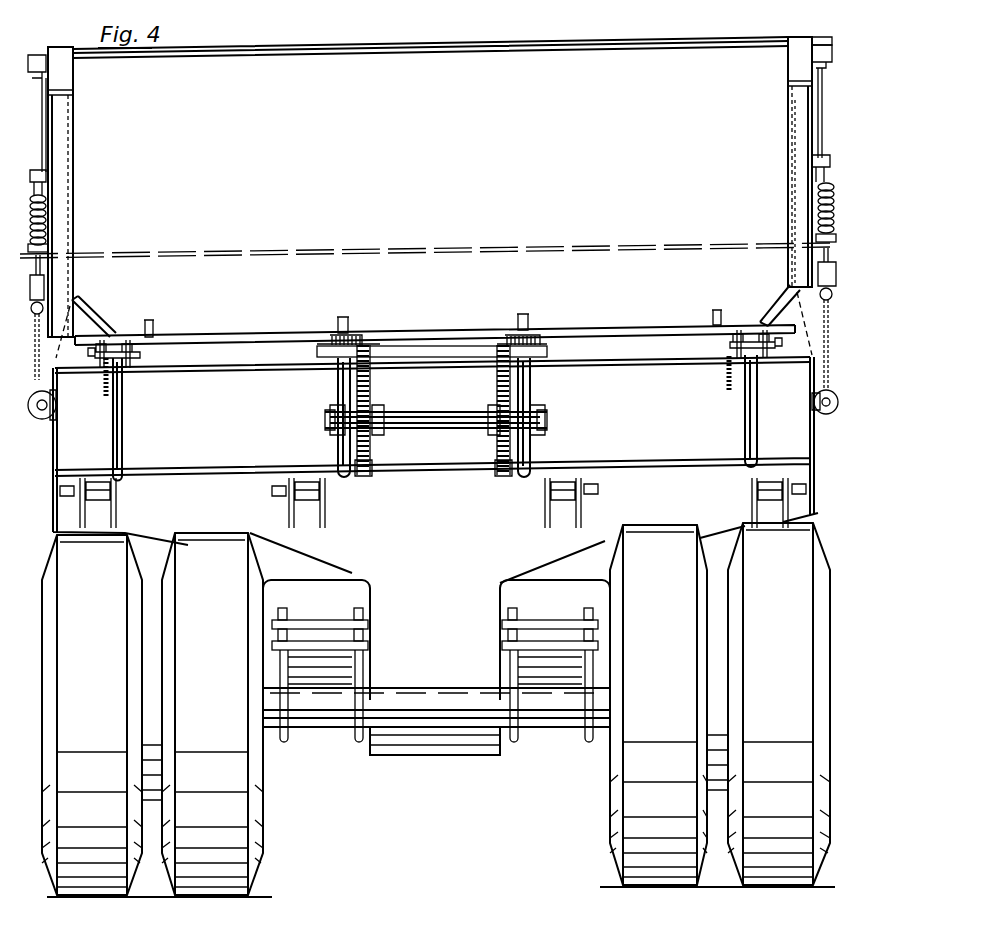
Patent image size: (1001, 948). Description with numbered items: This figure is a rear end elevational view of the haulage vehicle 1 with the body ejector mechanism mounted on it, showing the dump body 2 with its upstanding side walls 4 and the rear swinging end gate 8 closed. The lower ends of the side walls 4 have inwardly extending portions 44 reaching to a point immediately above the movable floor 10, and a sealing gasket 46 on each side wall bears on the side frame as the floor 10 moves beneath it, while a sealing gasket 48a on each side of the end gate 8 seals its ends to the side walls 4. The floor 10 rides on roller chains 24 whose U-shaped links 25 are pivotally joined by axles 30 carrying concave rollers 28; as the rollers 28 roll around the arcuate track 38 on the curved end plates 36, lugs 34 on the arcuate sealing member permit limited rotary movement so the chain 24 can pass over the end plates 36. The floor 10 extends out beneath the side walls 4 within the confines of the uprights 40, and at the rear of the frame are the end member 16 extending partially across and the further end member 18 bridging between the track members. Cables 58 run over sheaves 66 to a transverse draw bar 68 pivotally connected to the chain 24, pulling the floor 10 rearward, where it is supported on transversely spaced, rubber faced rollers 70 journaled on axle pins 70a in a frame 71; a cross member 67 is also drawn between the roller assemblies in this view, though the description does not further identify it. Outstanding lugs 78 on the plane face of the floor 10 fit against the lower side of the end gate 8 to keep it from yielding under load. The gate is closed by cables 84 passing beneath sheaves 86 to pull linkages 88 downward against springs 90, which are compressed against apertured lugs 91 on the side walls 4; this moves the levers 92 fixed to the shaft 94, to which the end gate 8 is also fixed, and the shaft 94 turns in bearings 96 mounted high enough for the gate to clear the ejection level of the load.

The haulage vehicle 1 is at (472, 762).
The body 2 is at (804, 30).
The side walls 4 is at (73, 163).
The rear end gate 8 is at (272, 64).
The floor 10 is at (630, 347).
The end member 16 is at (645, 465).
The end member 18 is at (425, 385).
The roller chain 24 is at (135, 352).
The links 25 is at (736, 343).
The rollers 28 is at (350, 345).
The axles 30 is at (733, 360).
The lugs 34 is at (100, 372).
The curved end plates 36 is at (123, 428).
The arcuate track 38 is at (346, 478).
The uprights 40 is at (788, 152).
The inwardly extending portions 44 is at (782, 298).
The sealing gasket 46 is at (96, 328).
The sealing gasket 48a is at (82, 320).
The cables 58 is at (366, 478).
The sheaves 66 is at (368, 476).
The shaft 67 is at (425, 428).
The draw bar 68 is at (470, 352).
The rollers 70 is at (314, 512).
The axle pins 70a is at (276, 491).
The frame 71 is at (340, 578).
The lugs 78 is at (140, 330).
The cable 84 is at (52, 408).
The sheaves 86 is at (52, 420).
The linkages 88 is at (44, 290).
The springs 90 is at (42, 222).
The apertured lugs 91 is at (50, 250).
The levers 92 is at (45, 134).
The shaft 94 is at (40, 55).
The bearings 96 is at (62, 77).